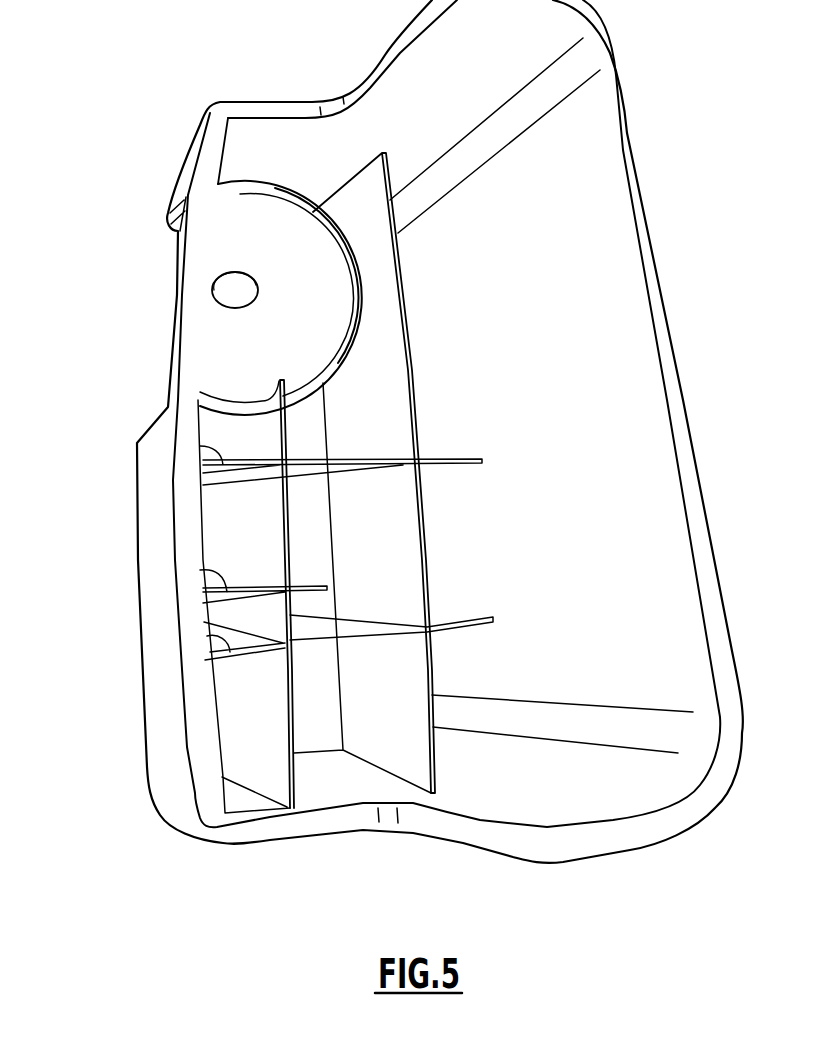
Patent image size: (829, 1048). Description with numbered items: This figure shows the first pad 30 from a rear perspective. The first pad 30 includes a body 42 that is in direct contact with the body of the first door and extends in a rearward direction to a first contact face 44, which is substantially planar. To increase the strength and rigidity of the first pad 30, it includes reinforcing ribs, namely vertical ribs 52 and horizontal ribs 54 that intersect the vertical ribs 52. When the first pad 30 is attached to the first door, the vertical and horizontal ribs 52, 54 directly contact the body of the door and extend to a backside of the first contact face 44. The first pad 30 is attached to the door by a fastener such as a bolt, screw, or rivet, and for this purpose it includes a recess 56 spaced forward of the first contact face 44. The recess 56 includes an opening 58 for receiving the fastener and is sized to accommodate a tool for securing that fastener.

The first pad 30 is at (397, 442).
The body 42 is at (167, 743).
The first contact face 44 is at (145, 712).
The vertical ribs 52 is at (287, 782).
The horizontal ribs 54 is at (197, 446).
The recess 56 is at (158, 295).
The opening 58 is at (237, 292).